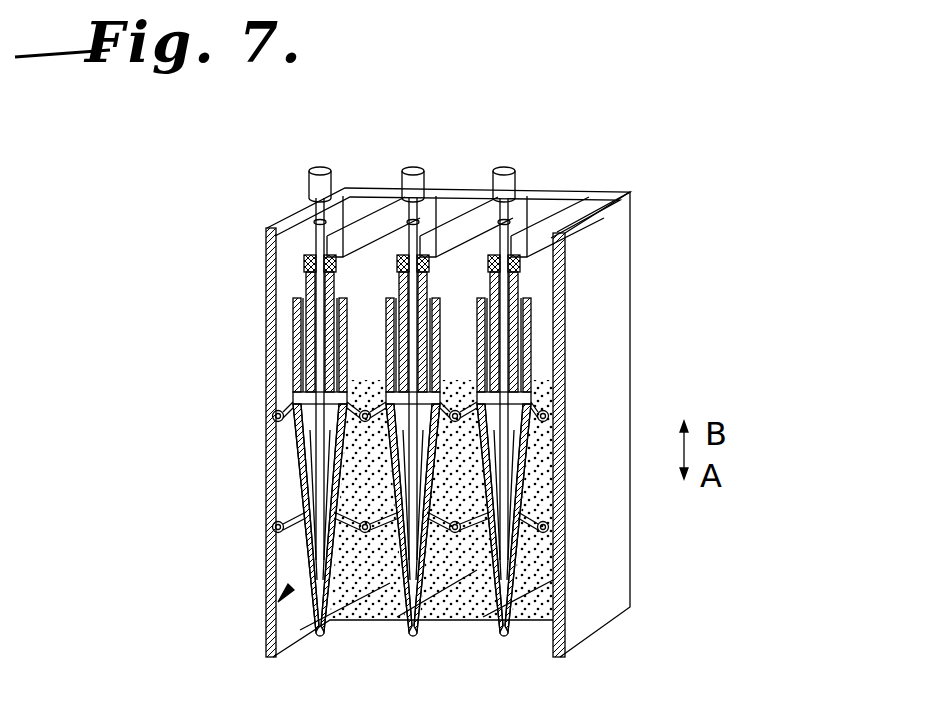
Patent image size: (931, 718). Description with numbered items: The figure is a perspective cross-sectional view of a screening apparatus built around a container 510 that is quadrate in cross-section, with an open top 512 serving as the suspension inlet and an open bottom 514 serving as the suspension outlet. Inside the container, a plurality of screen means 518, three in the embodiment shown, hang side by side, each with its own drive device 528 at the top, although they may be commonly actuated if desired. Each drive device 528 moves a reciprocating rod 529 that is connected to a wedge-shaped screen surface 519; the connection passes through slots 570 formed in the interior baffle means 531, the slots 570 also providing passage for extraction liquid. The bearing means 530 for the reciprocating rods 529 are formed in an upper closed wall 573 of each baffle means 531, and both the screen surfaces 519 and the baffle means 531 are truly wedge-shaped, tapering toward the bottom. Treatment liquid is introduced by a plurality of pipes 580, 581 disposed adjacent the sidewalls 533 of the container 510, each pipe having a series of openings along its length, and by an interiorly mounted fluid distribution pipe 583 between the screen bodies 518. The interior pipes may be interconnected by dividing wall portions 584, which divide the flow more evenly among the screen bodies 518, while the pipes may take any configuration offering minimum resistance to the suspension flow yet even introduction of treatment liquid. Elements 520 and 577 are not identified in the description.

The container 510 is at (618, 342).
The open top 512 is at (578, 200).
The open bottom 514 is at (546, 642).
The screen means 518 is at (272, 600).
The screen surface 519 is at (300, 462).
The outer sleeve 520 is at (292, 345).
The drive device 528 is at (307, 182).
The reciprocating rod 529 is at (318, 222).
The bearing means 530 is at (303, 258).
The interior baffle means 531 is at (310, 285).
The sidewall 533 is at (267, 578).
The slot 570 is at (305, 398).
The upper closed wall 573 is at (367, 230).
The arm 577 is at (280, 430).
The pipe 580 is at (278, 410).
The pipe 581 is at (272, 525).
The interiorly mounted fluid distribution pipe 583 is at (470, 490).
The dividing wall portion 584 is at (466, 605).